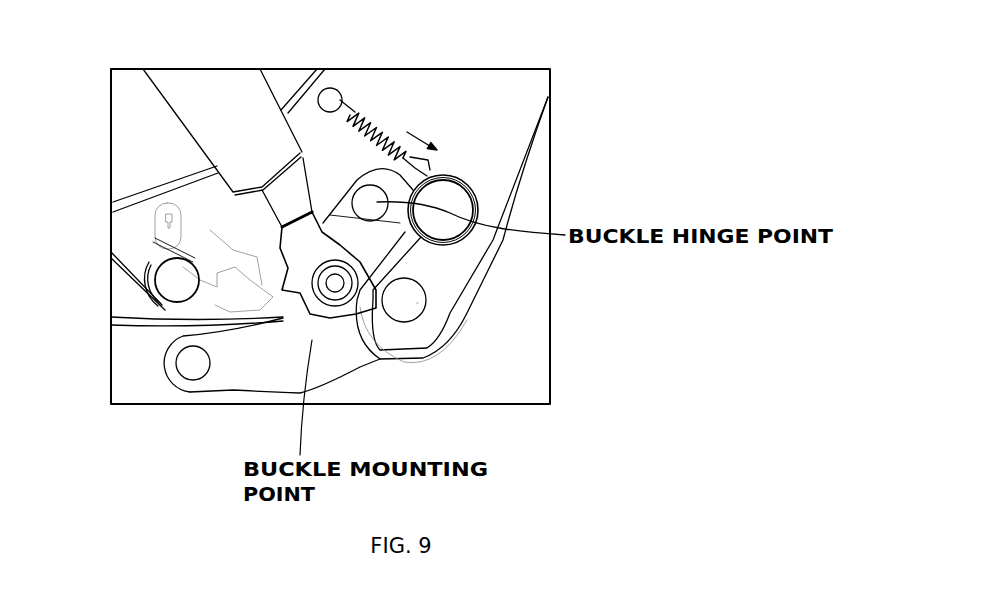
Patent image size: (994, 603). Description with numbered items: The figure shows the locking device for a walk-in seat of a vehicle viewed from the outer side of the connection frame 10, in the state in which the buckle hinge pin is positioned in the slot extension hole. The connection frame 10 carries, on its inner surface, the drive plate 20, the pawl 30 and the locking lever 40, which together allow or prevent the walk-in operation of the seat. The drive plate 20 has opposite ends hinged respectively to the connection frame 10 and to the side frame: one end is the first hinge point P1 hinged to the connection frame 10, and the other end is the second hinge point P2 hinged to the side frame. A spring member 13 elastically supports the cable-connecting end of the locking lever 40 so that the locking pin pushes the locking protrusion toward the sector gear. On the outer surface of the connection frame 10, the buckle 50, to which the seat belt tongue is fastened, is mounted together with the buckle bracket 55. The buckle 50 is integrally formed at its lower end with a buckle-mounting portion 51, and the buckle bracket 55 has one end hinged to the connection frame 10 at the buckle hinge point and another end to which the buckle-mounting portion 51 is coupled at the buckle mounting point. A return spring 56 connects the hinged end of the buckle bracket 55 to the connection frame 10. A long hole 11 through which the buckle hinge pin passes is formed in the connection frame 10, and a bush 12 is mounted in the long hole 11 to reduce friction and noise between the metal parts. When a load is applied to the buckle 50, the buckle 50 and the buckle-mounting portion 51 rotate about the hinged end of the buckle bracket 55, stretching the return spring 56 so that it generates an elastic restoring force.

The connection frame 10 is at (486, 294).
The long hole 11 is at (360, 310).
The bush 12 is at (400, 347).
The spring member 13 is at (126, 278).
The drive plate 20 is at (235, 401).
The pawl 30 is at (220, 205).
The locking lever 40 is at (144, 228).
The buckle 50 is at (188, 110).
The buckle-mounting portion 51 is at (343, 313).
The buckle bracket 55 is at (445, 243).
The return spring 56 is at (380, 113).
The first hinge point P1 is at (417, 303).
The second hinge point P2 is at (168, 368).